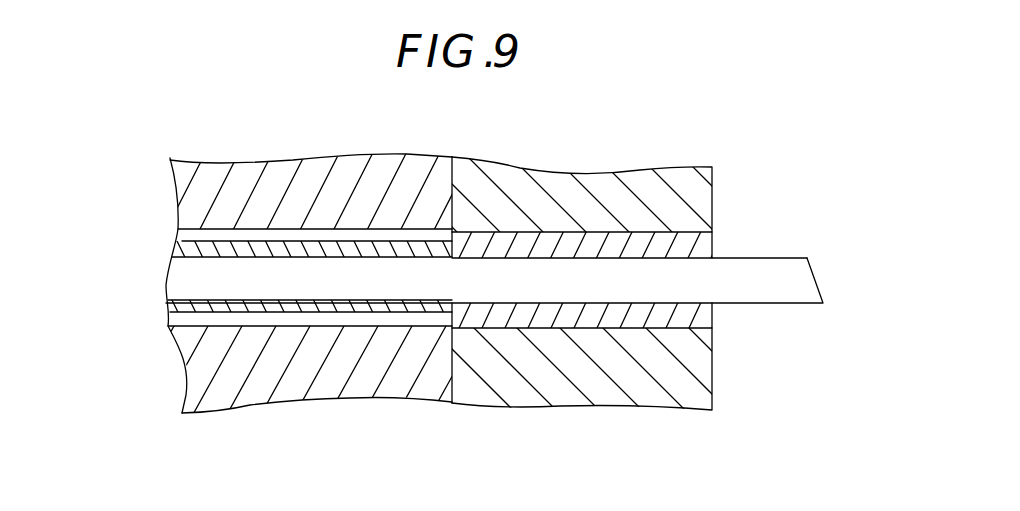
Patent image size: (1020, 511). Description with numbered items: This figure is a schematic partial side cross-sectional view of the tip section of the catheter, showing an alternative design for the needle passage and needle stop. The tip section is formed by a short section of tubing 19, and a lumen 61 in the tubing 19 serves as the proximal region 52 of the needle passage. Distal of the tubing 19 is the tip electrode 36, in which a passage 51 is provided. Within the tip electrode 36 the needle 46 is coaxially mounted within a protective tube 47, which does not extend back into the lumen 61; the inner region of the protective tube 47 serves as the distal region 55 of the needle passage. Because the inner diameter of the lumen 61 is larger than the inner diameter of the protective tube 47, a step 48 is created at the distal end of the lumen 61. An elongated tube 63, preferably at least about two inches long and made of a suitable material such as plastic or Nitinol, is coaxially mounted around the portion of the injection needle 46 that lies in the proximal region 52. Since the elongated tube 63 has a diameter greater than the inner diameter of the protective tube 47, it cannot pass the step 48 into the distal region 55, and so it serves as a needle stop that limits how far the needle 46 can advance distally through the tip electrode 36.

The tubing 19 is at (297, 380).
The tip electrode 36 is at (515, 392).
The needle 46 is at (735, 292).
The protective tube 47 is at (700, 243).
The step 48 is at (450, 237).
The passage 51 is at (633, 330).
The proximal region 52 is at (187, 237).
The distal region 55 is at (690, 260).
The lumen 61 is at (176, 320).
The elongated tube 63 is at (393, 310).